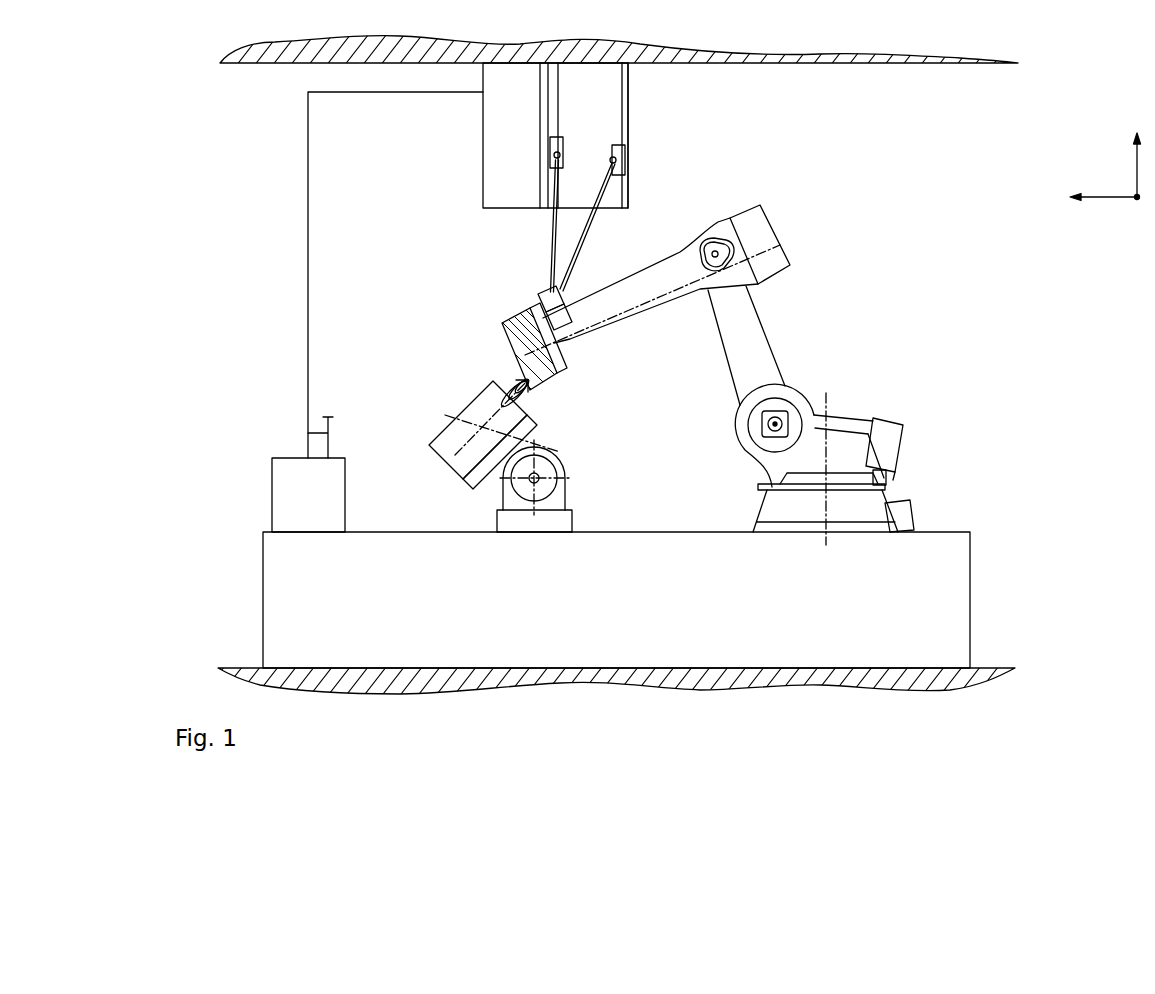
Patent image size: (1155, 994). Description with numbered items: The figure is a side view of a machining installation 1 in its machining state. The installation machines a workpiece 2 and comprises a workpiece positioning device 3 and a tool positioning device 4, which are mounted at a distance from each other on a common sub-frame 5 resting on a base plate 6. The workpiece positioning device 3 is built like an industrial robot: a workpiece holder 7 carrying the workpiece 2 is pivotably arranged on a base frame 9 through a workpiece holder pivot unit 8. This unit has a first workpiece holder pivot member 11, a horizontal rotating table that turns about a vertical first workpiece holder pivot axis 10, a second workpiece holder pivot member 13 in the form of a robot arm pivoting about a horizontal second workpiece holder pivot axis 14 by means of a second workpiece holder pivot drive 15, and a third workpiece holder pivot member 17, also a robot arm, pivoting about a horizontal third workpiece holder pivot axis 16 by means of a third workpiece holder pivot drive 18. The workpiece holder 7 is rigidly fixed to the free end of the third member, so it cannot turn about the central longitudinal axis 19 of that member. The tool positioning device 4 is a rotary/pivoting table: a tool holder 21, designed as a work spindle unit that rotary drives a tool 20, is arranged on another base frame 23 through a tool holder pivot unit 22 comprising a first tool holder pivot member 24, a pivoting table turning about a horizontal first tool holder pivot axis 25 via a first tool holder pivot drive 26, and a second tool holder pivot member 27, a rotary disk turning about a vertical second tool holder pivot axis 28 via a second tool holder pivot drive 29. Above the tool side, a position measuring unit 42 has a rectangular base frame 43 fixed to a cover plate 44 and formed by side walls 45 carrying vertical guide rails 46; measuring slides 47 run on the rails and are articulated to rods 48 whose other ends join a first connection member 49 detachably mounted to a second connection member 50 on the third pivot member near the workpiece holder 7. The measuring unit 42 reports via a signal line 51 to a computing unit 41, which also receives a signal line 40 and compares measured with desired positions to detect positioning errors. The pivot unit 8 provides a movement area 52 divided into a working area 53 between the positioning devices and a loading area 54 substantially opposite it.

The machining installation 1 is at (928, 213).
The workpiece 2 is at (505, 338).
The workpiece positioning device 3 is at (762, 349).
The tool positioning device 4 is at (516, 436).
The sub-frame 5 is at (278, 594).
The base plate 6 is at (222, 672).
The workpiece holder 7 is at (548, 370).
The workpiece holder pivot unit 8 is at (758, 325).
The base frame 9 is at (880, 505).
The first workpiece holder pivot axis 10 is at (868, 405).
The first workpiece holder pivot member 11 is at (878, 457).
The second workpiece holder pivot member 13 is at (733, 362).
The second workpiece holder pivot axis 14 is at (760, 432).
The second workpiece holder pivot drive 15 is at (786, 420).
The third workpiece holder pivot axis 16 is at (727, 233).
The third workpiece holder pivot member 17 is at (633, 313).
The third workpiece holder pivot drive 18 is at (700, 245).
The central longitudinal axis 19 is at (780, 233).
The tool 20 is at (522, 380).
The tool holder 21 is at (460, 432).
The tool holder pivot unit 22 is at (570, 462).
The base frame 23 is at (500, 525).
The first tool holder pivot member 24 is at (495, 487).
The first tool holder pivot axis 25 is at (543, 482).
The first tool holder pivot drive 26 is at (553, 487).
The second tool holder pivot member 27 is at (523, 453).
The second tool holder pivot axis 28 is at (445, 405).
The second tool holder pivot drive 29 is at (498, 468).
The signal line 40 is at (328, 433).
The computing unit 41 is at (280, 485).
The position measuring unit 42 is at (549, 143).
The base frame 43 is at (508, 127).
The cover plate 44 is at (258, 46).
The side wall 45 is at (483, 197).
The guide rail 46 is at (557, 132).
The measuring slide 47 is at (550, 147).
The rod 48 is at (567, 267).
The first connection member 49 is at (540, 295).
The second connection member 50 is at (557, 308).
The signal line 51 is at (305, 322).
The movement area 52 is at (853, 254).
The working area 53 is at (651, 437).
The loading area 54 is at (1037, 324).